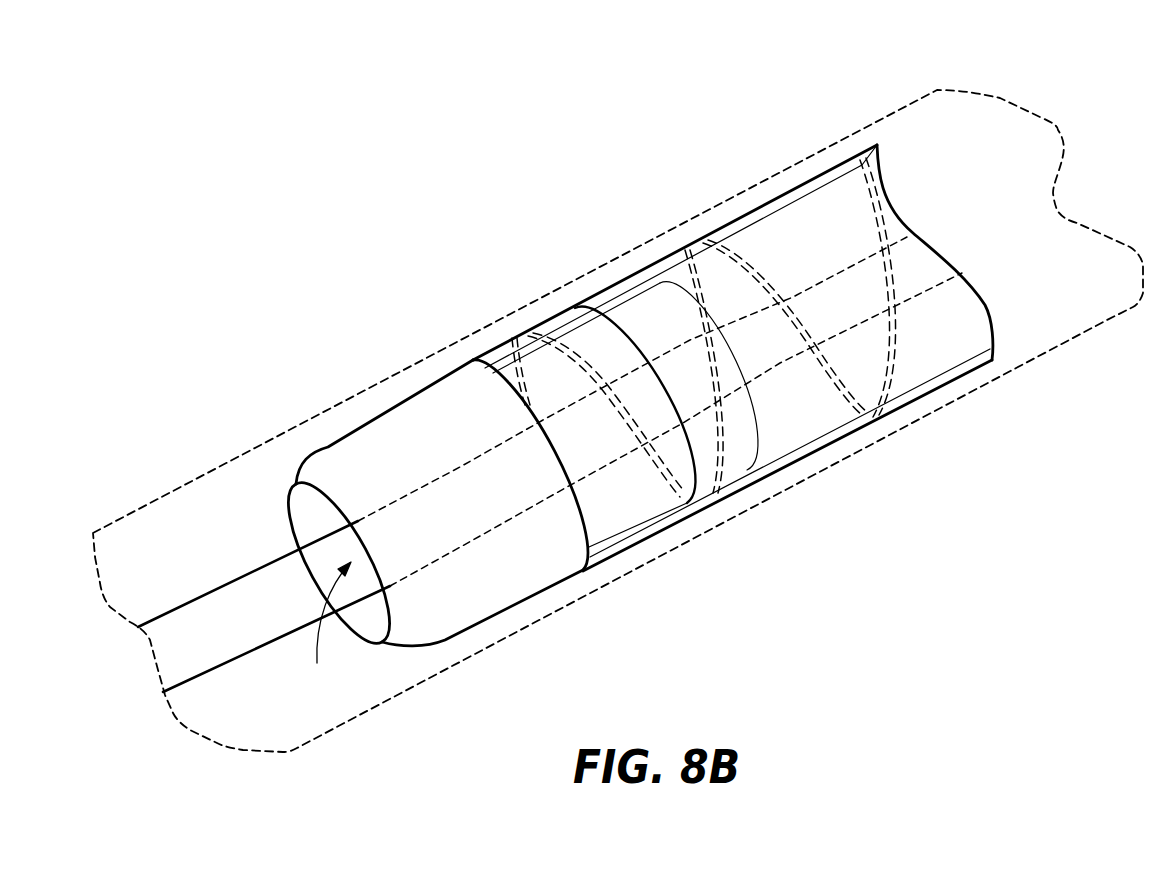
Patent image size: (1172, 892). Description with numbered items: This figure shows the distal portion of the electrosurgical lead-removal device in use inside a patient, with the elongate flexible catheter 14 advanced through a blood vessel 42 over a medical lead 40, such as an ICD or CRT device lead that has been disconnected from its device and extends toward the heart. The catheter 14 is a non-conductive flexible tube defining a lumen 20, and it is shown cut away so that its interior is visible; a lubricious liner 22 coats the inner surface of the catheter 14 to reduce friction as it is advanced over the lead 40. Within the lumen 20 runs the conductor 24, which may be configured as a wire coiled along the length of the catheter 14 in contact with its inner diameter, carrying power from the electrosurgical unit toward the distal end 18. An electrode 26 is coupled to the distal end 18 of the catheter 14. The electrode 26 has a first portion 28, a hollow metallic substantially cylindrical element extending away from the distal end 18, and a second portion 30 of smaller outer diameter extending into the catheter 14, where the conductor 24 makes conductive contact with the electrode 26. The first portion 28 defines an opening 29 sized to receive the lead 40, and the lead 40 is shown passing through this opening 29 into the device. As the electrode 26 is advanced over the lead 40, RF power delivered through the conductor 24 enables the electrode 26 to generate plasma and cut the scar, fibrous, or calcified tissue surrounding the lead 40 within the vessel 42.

The elongate flexible catheter 14 is at (723, 227).
The distal end 18 is at (475, 360).
The lumen 20 is at (850, 357).
The lubricious liner 22 is at (943, 380).
The conductor 24 is at (777, 293).
The electrode 26 is at (380, 412).
The first portion 28 is at (521, 605).
The opening 29 is at (329, 627).
The second portion 30 is at (643, 483).
The medical lead 40 is at (223, 580).
The blood vessel 42 is at (238, 458).